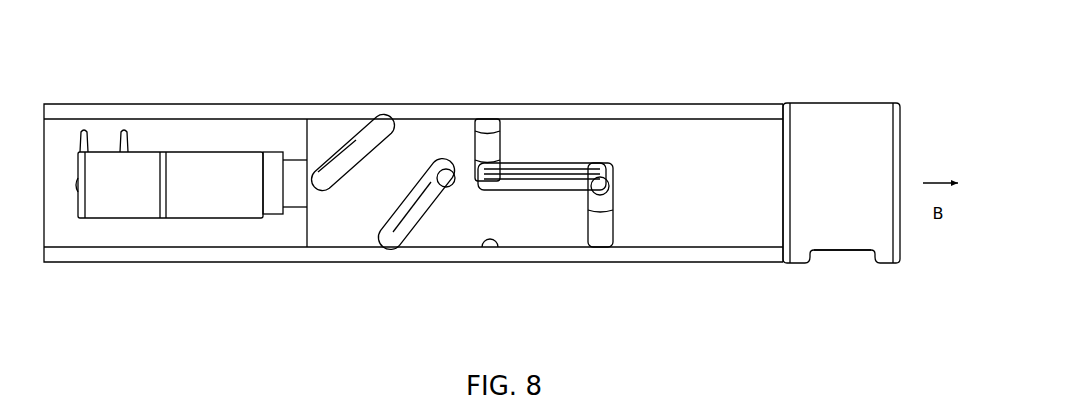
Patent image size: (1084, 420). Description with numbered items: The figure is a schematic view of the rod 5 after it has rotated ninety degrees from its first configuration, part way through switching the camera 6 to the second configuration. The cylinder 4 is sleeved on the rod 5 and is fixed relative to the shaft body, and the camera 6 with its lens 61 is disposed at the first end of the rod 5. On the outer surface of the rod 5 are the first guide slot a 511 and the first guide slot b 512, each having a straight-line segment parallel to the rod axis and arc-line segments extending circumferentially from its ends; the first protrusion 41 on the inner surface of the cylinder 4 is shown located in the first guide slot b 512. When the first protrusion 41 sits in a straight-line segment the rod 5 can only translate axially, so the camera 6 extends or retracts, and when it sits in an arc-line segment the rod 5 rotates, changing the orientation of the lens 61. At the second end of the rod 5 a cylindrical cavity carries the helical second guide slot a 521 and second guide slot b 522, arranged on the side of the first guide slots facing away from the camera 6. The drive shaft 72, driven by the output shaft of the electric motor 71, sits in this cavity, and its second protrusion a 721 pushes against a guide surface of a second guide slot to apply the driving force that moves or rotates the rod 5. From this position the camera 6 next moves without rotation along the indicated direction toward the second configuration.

The cylinder 4 is at (170, 110).
The rod 5 is at (690, 180).
The camera 6 is at (826, 185).
The first protrusion 41 is at (584, 189).
The lens 61 is at (835, 260).
The electric motor 71 is at (217, 188).
The drive shaft 72 is at (290, 180).
The first guide slot a 511 is at (593, 227).
The first guide slot b 512 is at (520, 177).
The second guide slot a 521 is at (408, 230).
The second guide slot b 522 is at (357, 140).
The second protrusion a 721 is at (445, 176).